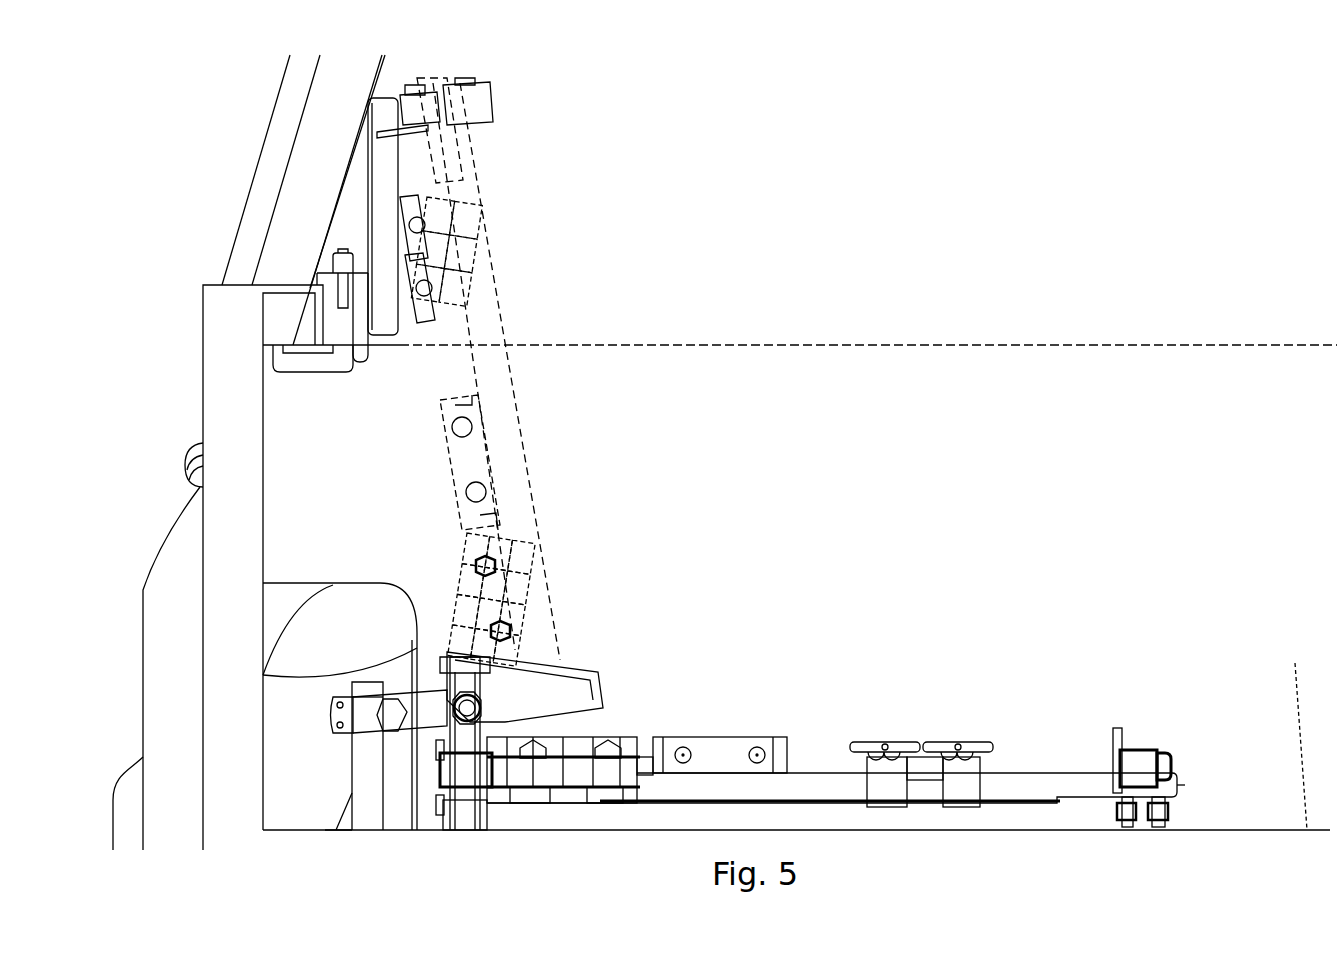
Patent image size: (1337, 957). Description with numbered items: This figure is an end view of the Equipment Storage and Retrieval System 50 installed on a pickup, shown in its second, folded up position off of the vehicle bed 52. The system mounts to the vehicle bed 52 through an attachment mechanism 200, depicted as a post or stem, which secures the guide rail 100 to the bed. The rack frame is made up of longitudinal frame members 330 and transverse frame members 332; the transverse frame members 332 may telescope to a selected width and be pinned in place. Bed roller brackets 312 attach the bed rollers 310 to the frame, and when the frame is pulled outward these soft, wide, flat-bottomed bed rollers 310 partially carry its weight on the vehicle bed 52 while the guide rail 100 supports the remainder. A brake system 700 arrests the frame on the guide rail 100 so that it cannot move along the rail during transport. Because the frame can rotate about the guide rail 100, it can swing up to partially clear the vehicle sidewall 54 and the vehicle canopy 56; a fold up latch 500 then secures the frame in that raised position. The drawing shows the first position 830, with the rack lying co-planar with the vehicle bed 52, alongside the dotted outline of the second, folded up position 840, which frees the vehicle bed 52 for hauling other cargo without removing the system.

The Equipment Storage and Retrieval System 50 is at (872, 565).
The vehicle bed 52 is at (1296, 727).
The vehicle sidewall 54 is at (251, 495).
The vehicle canopy 56 is at (340, 145).
The guide rail 100 is at (460, 700).
The attachment mechanism 200 is at (318, 722).
The bed rollers 310 is at (1140, 823).
The bed roller brackets 312 is at (1172, 760).
The longitudinal frame members 330 is at (465, 767).
The transverse frame members 332 is at (805, 785).
The fold up latch 500 is at (336, 395).
The brake system 700 is at (672, 652).
The first position 830 is at (1017, 690).
The second, folded up position 840 is at (522, 280).